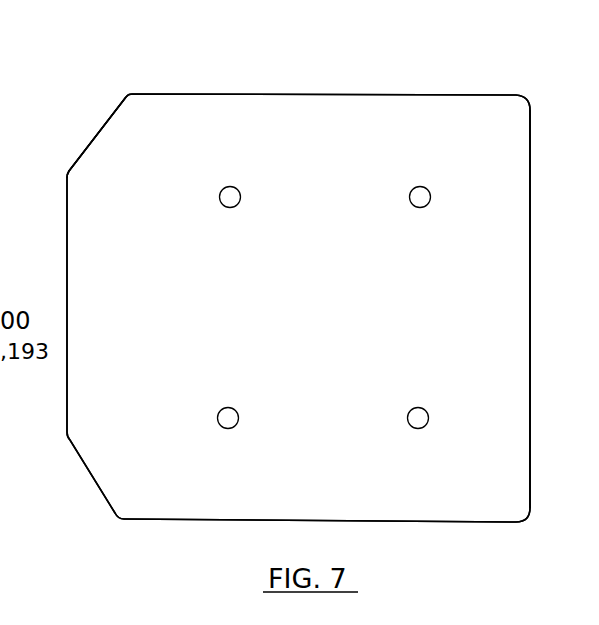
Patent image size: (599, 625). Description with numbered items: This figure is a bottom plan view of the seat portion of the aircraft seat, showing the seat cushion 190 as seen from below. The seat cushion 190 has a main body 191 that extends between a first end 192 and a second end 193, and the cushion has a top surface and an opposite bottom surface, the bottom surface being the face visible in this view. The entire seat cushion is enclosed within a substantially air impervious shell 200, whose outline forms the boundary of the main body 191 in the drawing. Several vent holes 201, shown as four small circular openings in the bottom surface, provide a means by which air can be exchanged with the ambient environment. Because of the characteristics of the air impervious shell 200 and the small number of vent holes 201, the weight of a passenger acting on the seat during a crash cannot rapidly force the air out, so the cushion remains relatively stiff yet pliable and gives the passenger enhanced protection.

The seat cushion 190 is at (297, 281).
The main body 191 is at (287, 125).
The first end 192 is at (95, 203).
The second end 193 is at (500, 221).
The air impervious shell 200 is at (218, 93).
The vent holes 201 is at (230, 208).